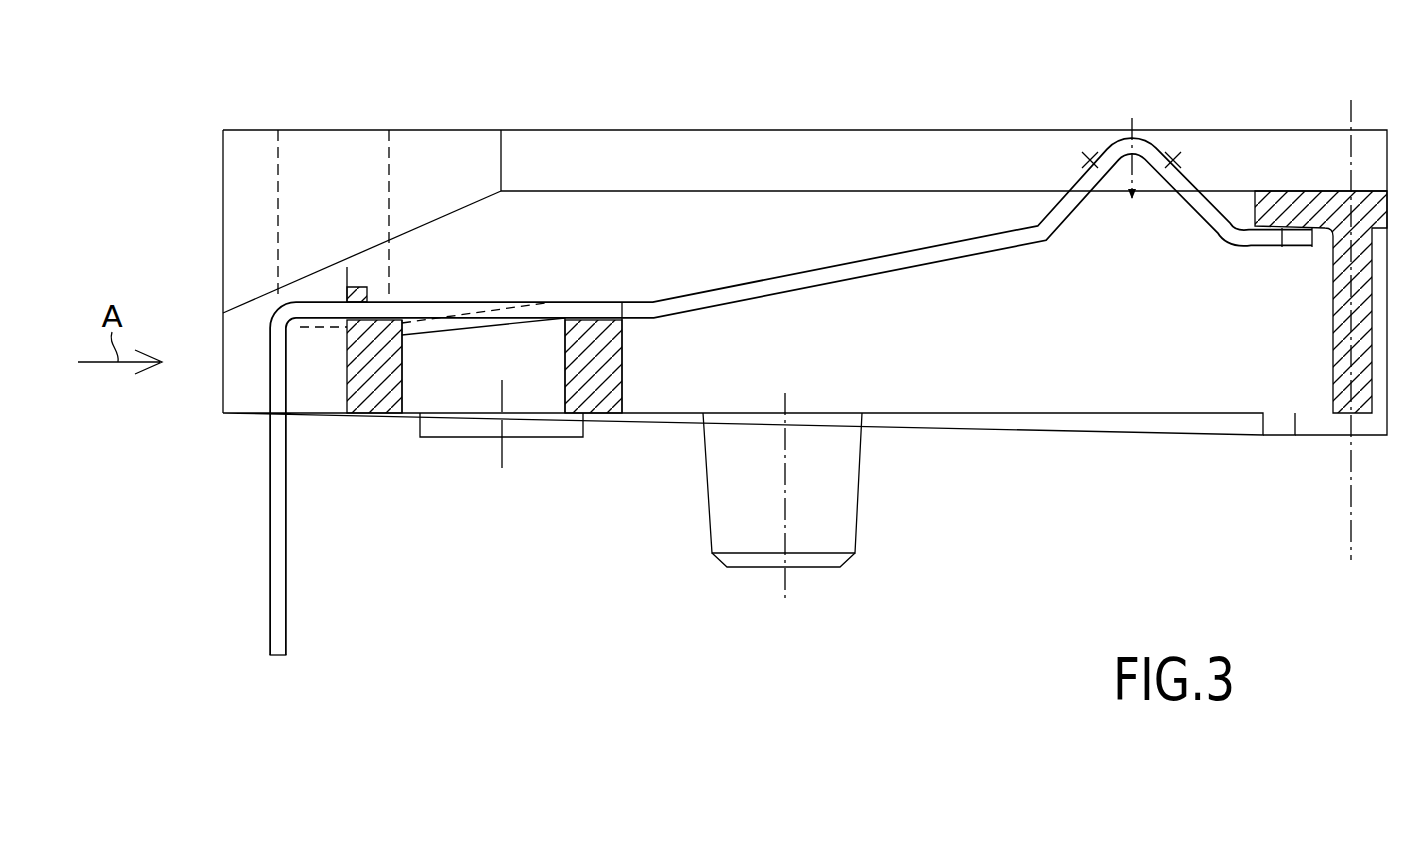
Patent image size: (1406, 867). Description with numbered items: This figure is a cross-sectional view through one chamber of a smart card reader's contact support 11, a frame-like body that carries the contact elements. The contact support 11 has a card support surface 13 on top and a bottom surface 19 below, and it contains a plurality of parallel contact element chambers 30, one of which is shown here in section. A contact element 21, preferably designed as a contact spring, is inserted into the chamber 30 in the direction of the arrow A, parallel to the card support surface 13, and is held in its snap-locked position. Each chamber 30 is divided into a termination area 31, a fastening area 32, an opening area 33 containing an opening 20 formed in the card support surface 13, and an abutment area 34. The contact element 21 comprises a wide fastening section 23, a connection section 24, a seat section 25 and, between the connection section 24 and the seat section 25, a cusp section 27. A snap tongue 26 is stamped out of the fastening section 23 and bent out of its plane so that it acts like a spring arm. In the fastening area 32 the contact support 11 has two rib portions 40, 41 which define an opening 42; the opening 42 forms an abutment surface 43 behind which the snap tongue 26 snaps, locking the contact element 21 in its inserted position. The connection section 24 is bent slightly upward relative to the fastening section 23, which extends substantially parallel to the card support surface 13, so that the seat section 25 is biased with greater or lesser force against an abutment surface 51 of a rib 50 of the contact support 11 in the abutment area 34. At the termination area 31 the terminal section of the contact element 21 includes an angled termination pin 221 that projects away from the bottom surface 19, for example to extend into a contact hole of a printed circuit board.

The contact support 11 is at (433, 128).
The card support surface 13 is at (607, 190).
The bottom surface 19 is at (232, 415).
The opening 20 is at (748, 210).
The contact element 21 is at (996, 255).
The fastening section 23 is at (597, 301).
The connection section 24 is at (895, 267).
The seat section 25 is at (1295, 250).
The snap tongue 26 is at (430, 326).
The cusp section 27 is at (1138, 120).
The contact element chamber 30 is at (702, 210).
The termination area 31 is at (309, 432).
The fastening area 32 is at (533, 449).
The opening area 33 is at (965, 400).
The abutment area 34 is at (1248, 305).
The rib portion 40 is at (371, 400).
The rib portion 41 is at (615, 414).
The opening 42 is at (600, 336).
The abutment surface 43 is at (411, 396).
The rib 50 is at (1308, 200).
The abutment surface 51 is at (1275, 250).
The termination pin 221 is at (280, 570).